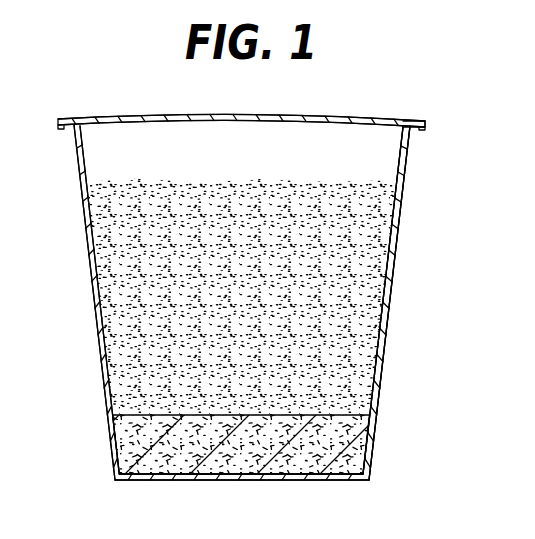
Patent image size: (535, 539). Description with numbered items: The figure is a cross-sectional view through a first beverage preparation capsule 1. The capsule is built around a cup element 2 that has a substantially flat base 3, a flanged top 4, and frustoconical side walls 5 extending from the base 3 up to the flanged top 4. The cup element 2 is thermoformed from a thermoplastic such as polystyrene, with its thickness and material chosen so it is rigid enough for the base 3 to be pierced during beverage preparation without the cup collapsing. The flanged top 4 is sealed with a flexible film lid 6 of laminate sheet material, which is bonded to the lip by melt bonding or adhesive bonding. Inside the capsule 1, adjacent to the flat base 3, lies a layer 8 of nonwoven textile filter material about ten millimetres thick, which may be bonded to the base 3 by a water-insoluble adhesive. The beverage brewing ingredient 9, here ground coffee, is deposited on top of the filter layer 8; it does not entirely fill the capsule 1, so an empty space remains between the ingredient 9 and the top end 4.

The beverage preparation capsule 1 is at (400, 90).
The cup element 2 is at (385, 358).
The base 3 is at (127, 482).
The flanged top 4 is at (414, 130).
The frustoconical side walls 5 is at (393, 266).
The flexible film lid 6 is at (95, 119).
The layer of nonwoven textile filter material 8 is at (353, 458).
The beverage brewing ingredient 9 is at (110, 292).